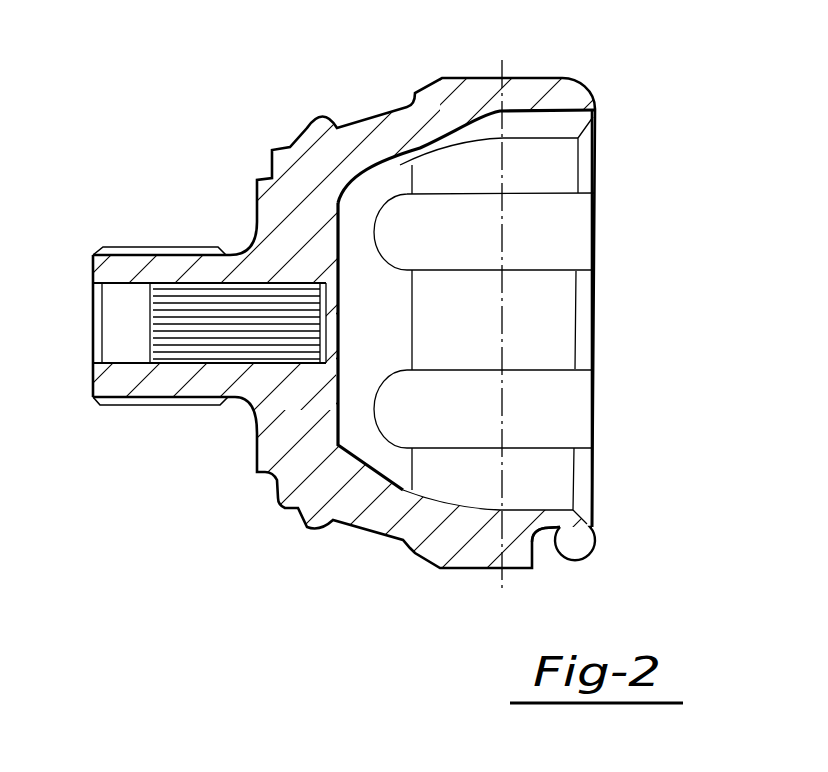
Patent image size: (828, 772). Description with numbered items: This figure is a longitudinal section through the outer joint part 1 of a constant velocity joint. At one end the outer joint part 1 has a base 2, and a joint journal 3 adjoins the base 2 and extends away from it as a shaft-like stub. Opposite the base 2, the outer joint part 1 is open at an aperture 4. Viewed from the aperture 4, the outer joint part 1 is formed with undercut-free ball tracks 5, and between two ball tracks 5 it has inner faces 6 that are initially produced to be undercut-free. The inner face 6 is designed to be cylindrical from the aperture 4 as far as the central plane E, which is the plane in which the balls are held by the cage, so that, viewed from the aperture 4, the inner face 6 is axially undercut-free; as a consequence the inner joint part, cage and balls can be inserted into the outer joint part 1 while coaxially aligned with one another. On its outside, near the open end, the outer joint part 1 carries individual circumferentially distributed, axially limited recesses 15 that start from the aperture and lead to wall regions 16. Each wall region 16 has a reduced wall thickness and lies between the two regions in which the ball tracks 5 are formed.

The outer joint part 1 is at (382, 108).
The base 2 is at (313, 207).
The joint journal 3 is at (172, 267).
The aperture 4 is at (597, 170).
The ball tracks 5 is at (550, 127).
The inner faces 6 is at (477, 163).
The recesses 15 is at (586, 553).
The wall regions 16 is at (558, 520).
The central plane E is at (502, 394).